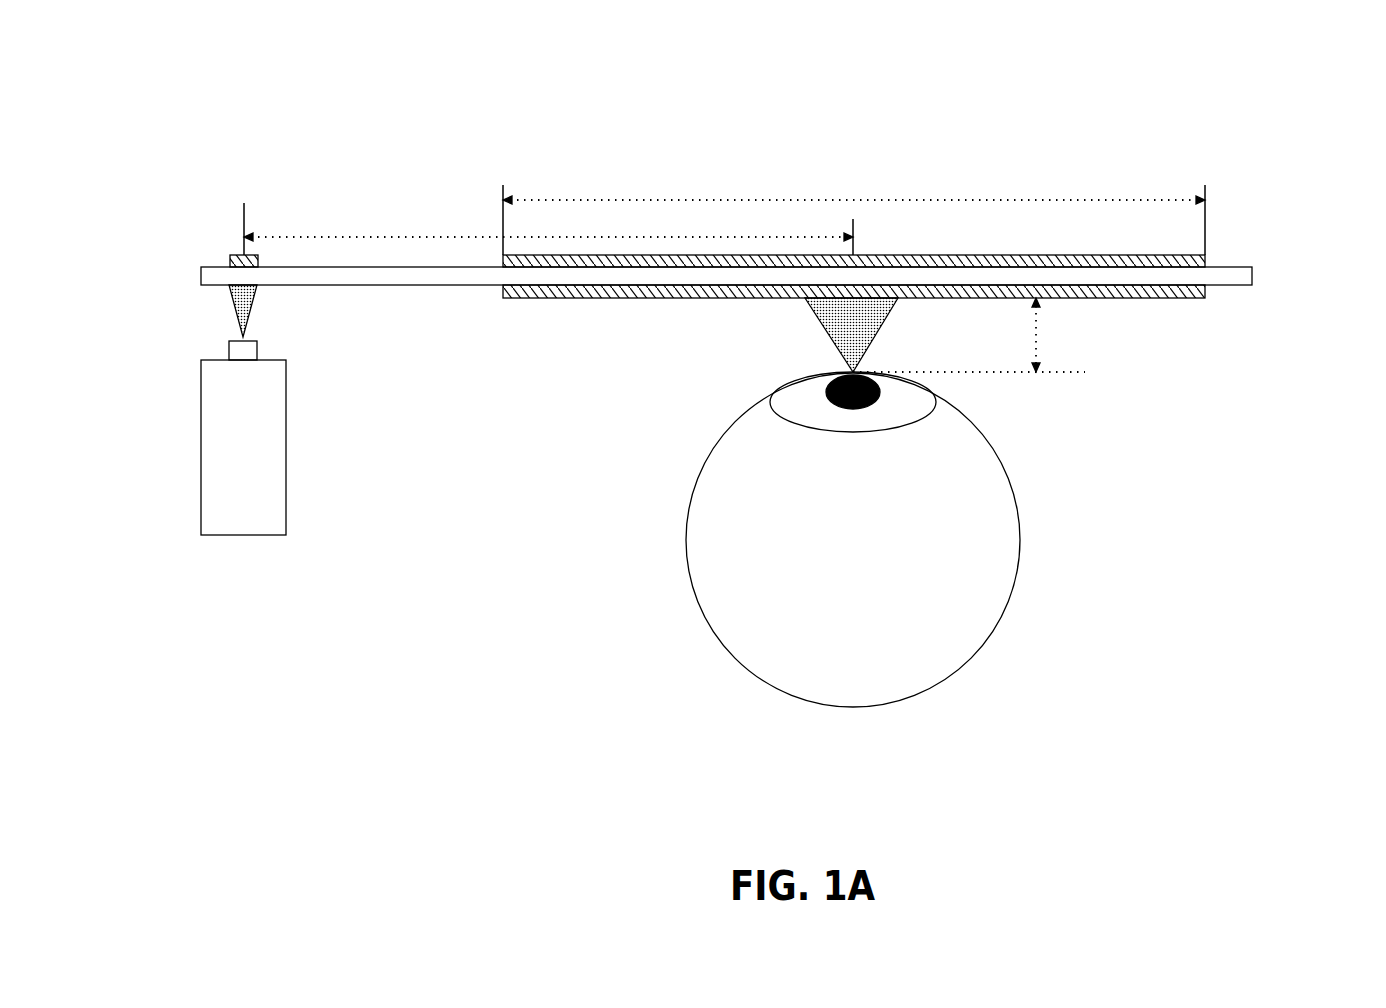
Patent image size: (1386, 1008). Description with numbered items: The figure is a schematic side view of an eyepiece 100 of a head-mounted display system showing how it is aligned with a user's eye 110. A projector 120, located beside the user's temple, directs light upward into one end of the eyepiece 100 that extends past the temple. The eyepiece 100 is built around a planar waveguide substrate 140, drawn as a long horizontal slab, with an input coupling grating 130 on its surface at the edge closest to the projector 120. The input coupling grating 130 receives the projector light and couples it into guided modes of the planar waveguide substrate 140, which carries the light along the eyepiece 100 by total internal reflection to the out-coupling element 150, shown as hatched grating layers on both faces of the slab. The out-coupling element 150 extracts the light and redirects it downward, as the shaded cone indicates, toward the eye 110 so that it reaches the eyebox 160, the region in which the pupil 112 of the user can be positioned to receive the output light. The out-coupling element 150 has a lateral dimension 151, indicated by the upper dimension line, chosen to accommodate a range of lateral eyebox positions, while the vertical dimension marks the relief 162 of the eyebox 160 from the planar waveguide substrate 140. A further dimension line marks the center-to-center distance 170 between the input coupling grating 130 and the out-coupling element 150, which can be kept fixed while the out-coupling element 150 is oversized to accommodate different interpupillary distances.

The eyepiece 100 is at (1065, 106).
The eye 110 is at (853, 540).
The pupil 112 is at (880, 388).
The projector 120 is at (243, 438).
The input coupling grating (ICG) 130 is at (230, 257).
The planar waveguide substrate 140 is at (202, 275).
The out-coupling element (OCE) 150 is at (1205, 260).
The lateral dimension 151 is at (802, 200).
The eyebox 160 is at (830, 333).
The relief 162 is at (1036, 342).
The center-to-center distance 170 is at (473, 237).